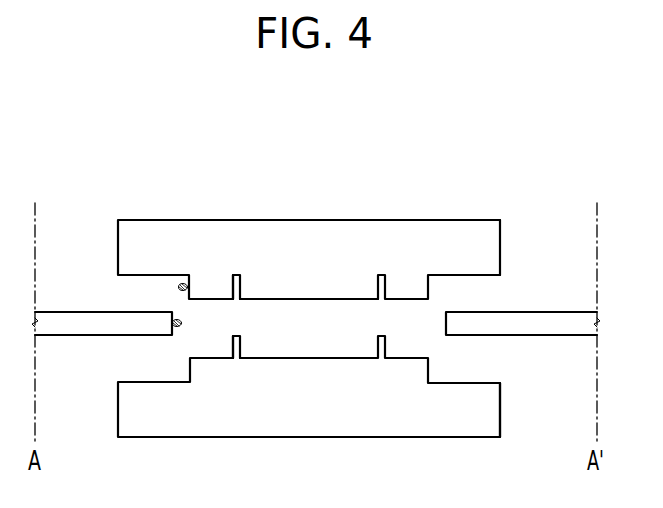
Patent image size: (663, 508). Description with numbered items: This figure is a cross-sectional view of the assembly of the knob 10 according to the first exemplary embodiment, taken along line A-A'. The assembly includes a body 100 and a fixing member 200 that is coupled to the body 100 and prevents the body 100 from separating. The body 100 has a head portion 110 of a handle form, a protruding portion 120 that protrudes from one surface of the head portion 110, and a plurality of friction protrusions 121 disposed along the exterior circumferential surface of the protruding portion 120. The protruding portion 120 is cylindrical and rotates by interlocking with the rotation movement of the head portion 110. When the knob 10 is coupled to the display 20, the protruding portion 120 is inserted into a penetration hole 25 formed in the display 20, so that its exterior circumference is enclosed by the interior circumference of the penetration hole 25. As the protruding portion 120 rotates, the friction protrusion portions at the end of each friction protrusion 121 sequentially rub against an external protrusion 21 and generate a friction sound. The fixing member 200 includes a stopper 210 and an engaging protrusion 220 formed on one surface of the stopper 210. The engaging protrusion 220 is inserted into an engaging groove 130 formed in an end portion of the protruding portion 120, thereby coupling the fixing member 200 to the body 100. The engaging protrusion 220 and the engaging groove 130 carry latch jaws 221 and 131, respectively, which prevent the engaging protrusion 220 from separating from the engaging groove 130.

The knob 10 is at (434, 192).
The display 20 is at (69, 298).
The external protrusion 21 is at (174, 319).
The penetration hole 25 is at (418, 329).
The body 100 is at (470, 220).
The head portion 110 is at (500, 258).
The protruding portion 120 is at (312, 300).
The friction protrusion 121 is at (182, 285).
The engaging groove 130 is at (243, 279).
The latch jaw 131 is at (231, 291).
The fixing member 200 is at (470, 439).
The stopper 210 is at (500, 408).
The engaging protrusion 220 is at (241, 338).
The latch jaw 221 is at (232, 341).